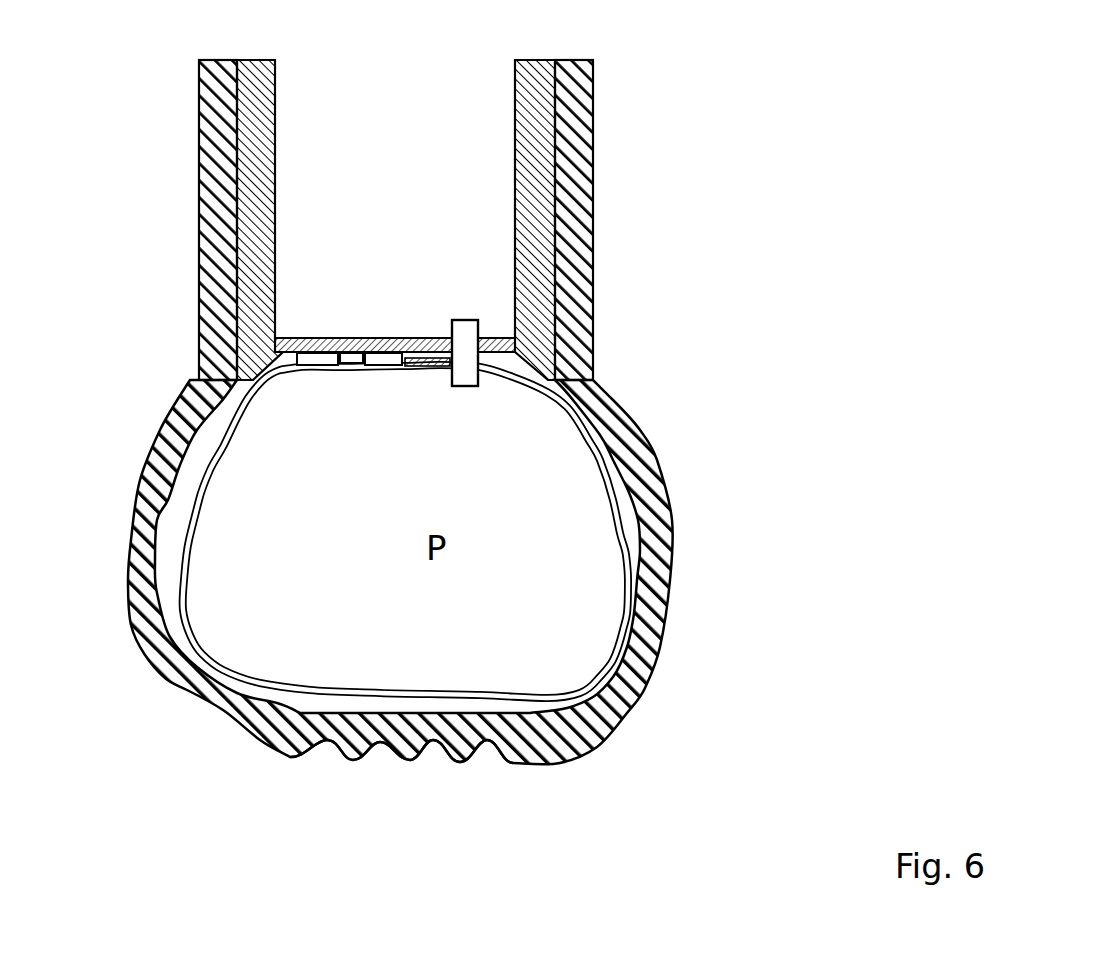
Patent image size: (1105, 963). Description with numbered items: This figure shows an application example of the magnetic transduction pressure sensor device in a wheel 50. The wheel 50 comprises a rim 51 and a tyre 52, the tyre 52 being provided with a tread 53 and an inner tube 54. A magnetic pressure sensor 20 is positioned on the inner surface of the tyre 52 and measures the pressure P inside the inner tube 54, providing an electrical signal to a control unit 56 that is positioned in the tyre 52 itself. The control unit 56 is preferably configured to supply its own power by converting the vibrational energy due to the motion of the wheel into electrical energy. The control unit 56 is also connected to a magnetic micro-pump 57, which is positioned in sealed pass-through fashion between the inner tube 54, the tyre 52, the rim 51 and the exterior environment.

The wheel 50 is at (775, 170).
The rim 51 is at (515, 168).
The tyre 52 is at (670, 578).
The tread 53 is at (432, 745).
The inner tube 54 is at (186, 587).
The control unit 56 is at (402, 338).
The magnetic micro-pump 57 is at (467, 340).
The magnetic pressure sensor 20 is at (316, 339).